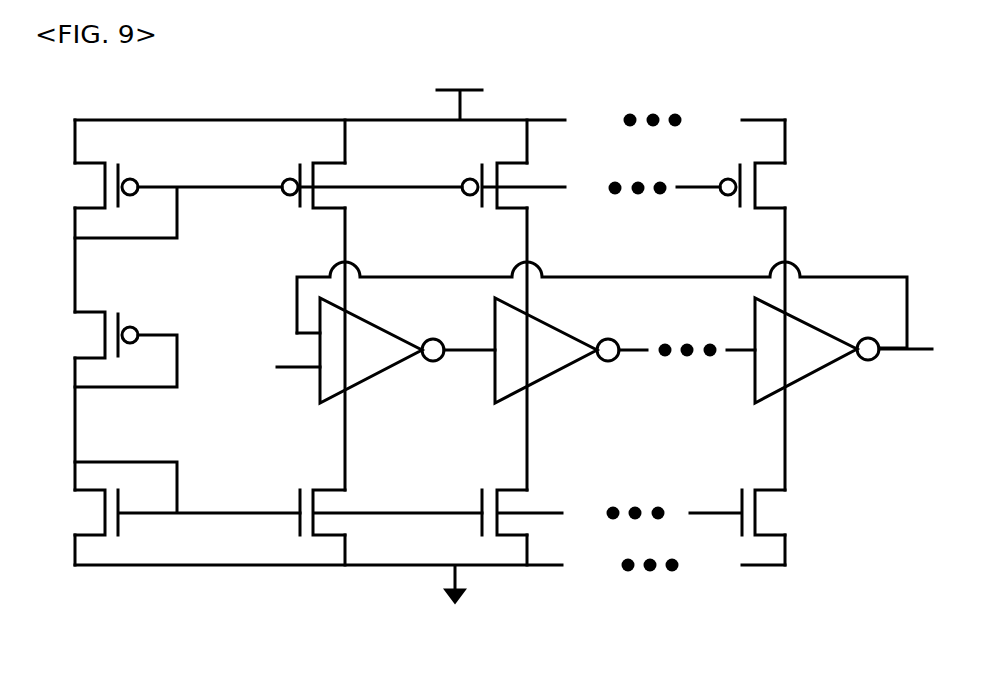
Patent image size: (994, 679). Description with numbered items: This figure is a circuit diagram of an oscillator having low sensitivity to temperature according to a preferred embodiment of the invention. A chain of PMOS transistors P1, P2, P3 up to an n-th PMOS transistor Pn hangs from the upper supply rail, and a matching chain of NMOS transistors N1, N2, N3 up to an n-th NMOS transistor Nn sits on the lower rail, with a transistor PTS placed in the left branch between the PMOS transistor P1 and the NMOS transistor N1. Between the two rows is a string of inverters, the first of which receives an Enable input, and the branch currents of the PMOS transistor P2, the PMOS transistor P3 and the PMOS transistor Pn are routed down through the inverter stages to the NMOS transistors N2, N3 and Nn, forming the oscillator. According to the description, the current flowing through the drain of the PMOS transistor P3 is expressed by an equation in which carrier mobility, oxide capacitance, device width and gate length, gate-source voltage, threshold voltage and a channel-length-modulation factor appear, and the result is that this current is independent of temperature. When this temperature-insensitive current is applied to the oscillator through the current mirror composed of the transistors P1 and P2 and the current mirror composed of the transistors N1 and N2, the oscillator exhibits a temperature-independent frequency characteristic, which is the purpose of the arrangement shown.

The PMOS transistor P1 is at (157, 200).
The PMOS transistor for test signal PTS is at (101, 349).
The NMOS transistor N1 is at (166, 498).
The PMOS transistor P2 is at (352, 184).
The PMOS transistor P3 is at (496, 184).
The n-th PMOS transistor Pn is at (754, 185).
The NMOS transistor N2 is at (367, 510).
The third NMOS transistor N3 is at (498, 510).
The n-th NMOS transistor Nn is at (759, 527).
The enable signal input Enable is at (272, 382).